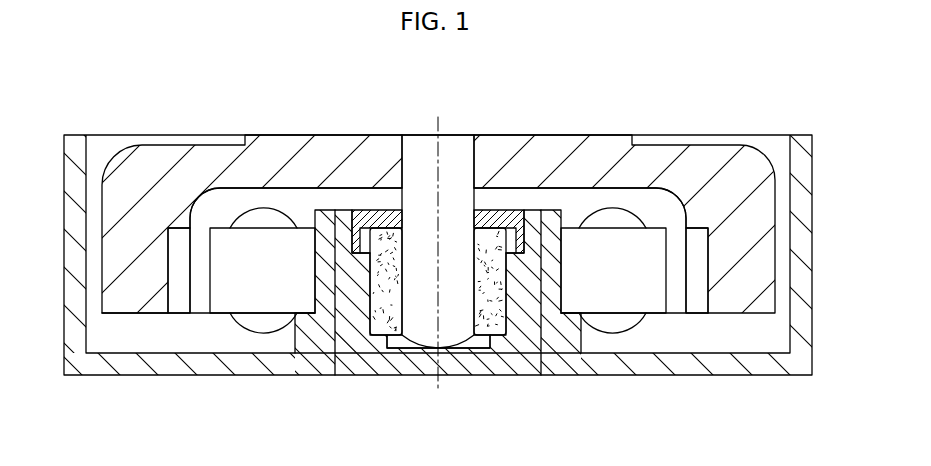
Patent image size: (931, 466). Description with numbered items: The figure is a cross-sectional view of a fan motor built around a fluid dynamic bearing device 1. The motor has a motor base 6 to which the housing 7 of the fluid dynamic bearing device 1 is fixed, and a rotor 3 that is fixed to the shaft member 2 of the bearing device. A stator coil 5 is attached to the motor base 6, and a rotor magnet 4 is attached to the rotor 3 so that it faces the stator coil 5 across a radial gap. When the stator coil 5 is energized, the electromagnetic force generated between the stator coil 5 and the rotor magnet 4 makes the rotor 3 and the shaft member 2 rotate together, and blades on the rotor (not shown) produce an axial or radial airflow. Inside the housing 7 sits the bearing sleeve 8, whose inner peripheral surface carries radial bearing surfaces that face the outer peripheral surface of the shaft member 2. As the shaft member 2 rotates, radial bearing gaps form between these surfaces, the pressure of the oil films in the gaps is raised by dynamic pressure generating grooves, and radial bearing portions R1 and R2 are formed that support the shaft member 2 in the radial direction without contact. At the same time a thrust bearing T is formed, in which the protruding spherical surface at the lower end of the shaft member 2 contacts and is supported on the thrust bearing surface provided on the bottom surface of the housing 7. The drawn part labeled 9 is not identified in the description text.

The fluid dynamic bearing device 1 is at (518, 200).
The shaft member 2 is at (458, 136).
The rotor 3 is at (688, 160).
The rotor magnet 4 is at (697, 301).
The stator coil 5 is at (655, 303).
The motor base 6 is at (566, 354).
The housing 7 is at (473, 367).
The bearing sleeve 8 is at (506, 323).
The bearing cap 9 is at (380, 222).
The radial bearing portion R1 is at (398, 257).
The radial bearing portion R2 is at (398, 310).
The thrust bearing T is at (437, 348).